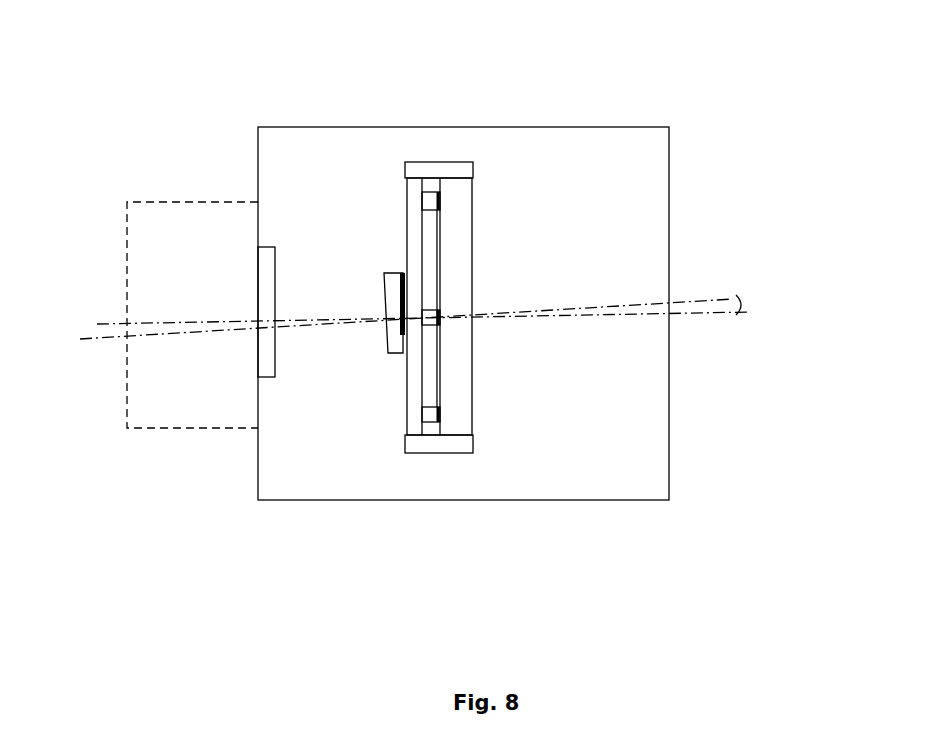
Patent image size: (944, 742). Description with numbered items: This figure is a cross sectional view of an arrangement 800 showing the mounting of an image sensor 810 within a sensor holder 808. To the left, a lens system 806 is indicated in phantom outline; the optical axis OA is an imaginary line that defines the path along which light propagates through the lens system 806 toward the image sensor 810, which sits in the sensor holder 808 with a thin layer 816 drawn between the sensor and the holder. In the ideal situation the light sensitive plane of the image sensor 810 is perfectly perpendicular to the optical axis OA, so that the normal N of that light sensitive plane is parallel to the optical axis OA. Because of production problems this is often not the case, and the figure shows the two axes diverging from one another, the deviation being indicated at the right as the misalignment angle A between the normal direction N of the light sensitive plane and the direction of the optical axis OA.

The optical assembly 800 is at (737, 122).
The lens system 806 is at (193, 430).
The sensor holder 808 is at (476, 202).
The image sensor 810 is at (395, 343).
The adhesive/mounting layer 816 is at (402, 273).
The normal N is at (702, 298).
The optical axis OA is at (710, 317).
The misalignment angle A is at (743, 305).